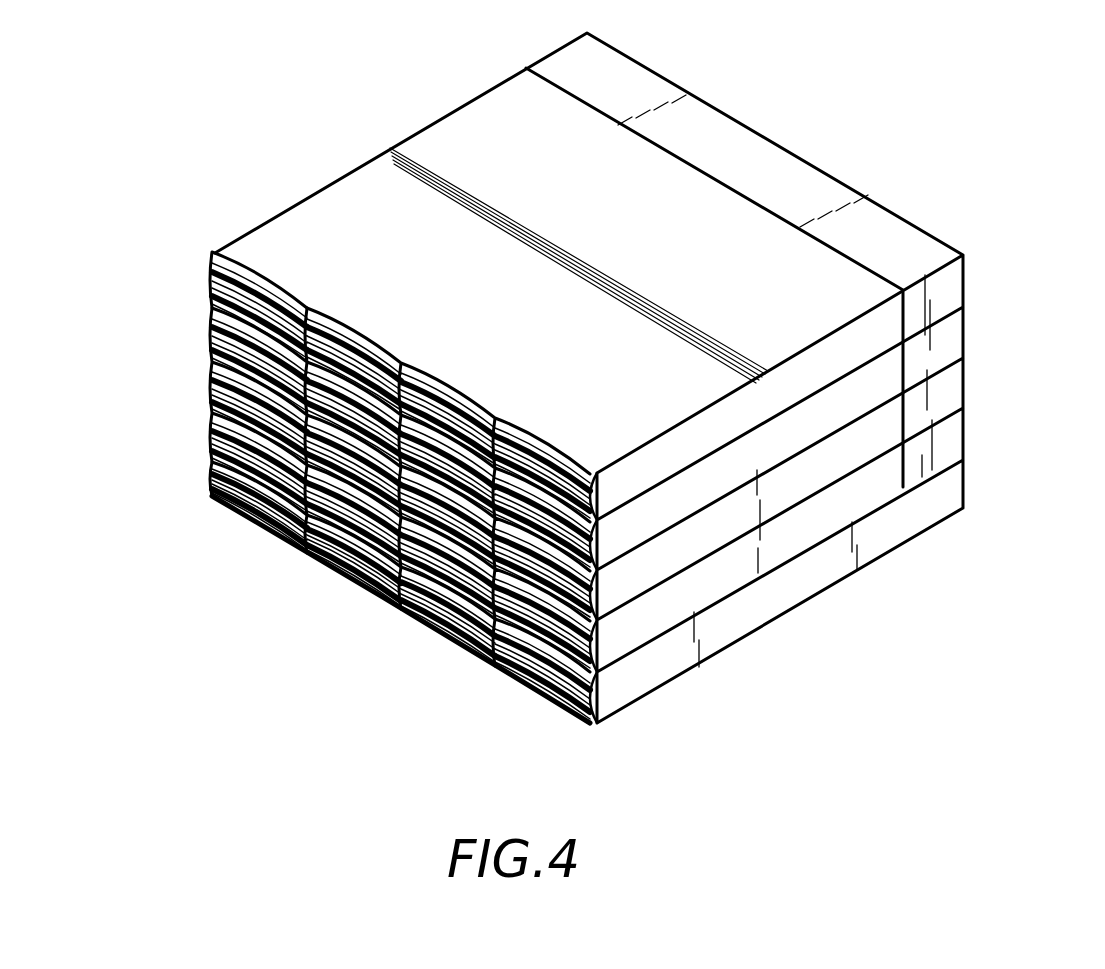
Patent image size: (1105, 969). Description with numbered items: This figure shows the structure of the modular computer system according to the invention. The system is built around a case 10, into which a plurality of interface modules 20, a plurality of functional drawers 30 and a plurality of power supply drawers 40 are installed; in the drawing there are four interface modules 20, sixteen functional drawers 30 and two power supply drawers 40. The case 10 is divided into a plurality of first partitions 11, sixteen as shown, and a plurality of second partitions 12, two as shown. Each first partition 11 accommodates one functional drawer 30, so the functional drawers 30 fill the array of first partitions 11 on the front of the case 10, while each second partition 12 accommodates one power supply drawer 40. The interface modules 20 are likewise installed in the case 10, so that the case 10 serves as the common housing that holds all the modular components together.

The case 10 is at (376, 131).
The first partition 11 is at (253, 277).
The second partition 12 is at (600, 697).
The interface module 20 is at (950, 303).
The functional drawer 30 is at (198, 443).
The power supply drawer 40 is at (295, 558).